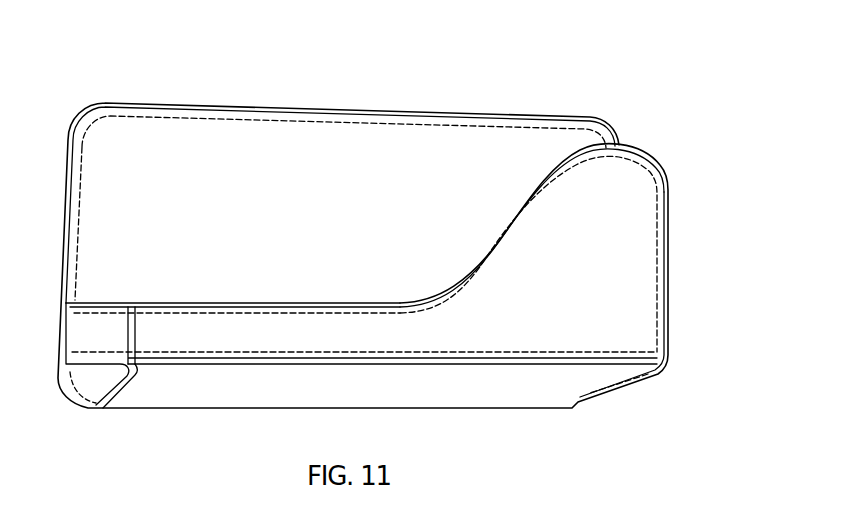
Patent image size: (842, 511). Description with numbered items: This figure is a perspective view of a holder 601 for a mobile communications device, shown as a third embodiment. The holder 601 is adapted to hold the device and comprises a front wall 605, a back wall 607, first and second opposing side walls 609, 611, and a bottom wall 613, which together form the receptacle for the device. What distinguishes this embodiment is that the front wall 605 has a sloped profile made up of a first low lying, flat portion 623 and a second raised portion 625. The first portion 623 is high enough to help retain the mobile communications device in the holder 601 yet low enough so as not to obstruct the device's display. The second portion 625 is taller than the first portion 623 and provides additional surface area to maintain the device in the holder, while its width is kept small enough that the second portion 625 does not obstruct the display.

The holder 601 is at (104, 55).
The front wall 605 is at (470, 339).
The back wall 607 is at (322, 193).
The first side wall 609 is at (83, 340).
The second side wall 611 is at (668, 308).
The bottom wall 613 is at (312, 399).
The first portion 623 is at (228, 283).
The second portion 625 is at (507, 196).